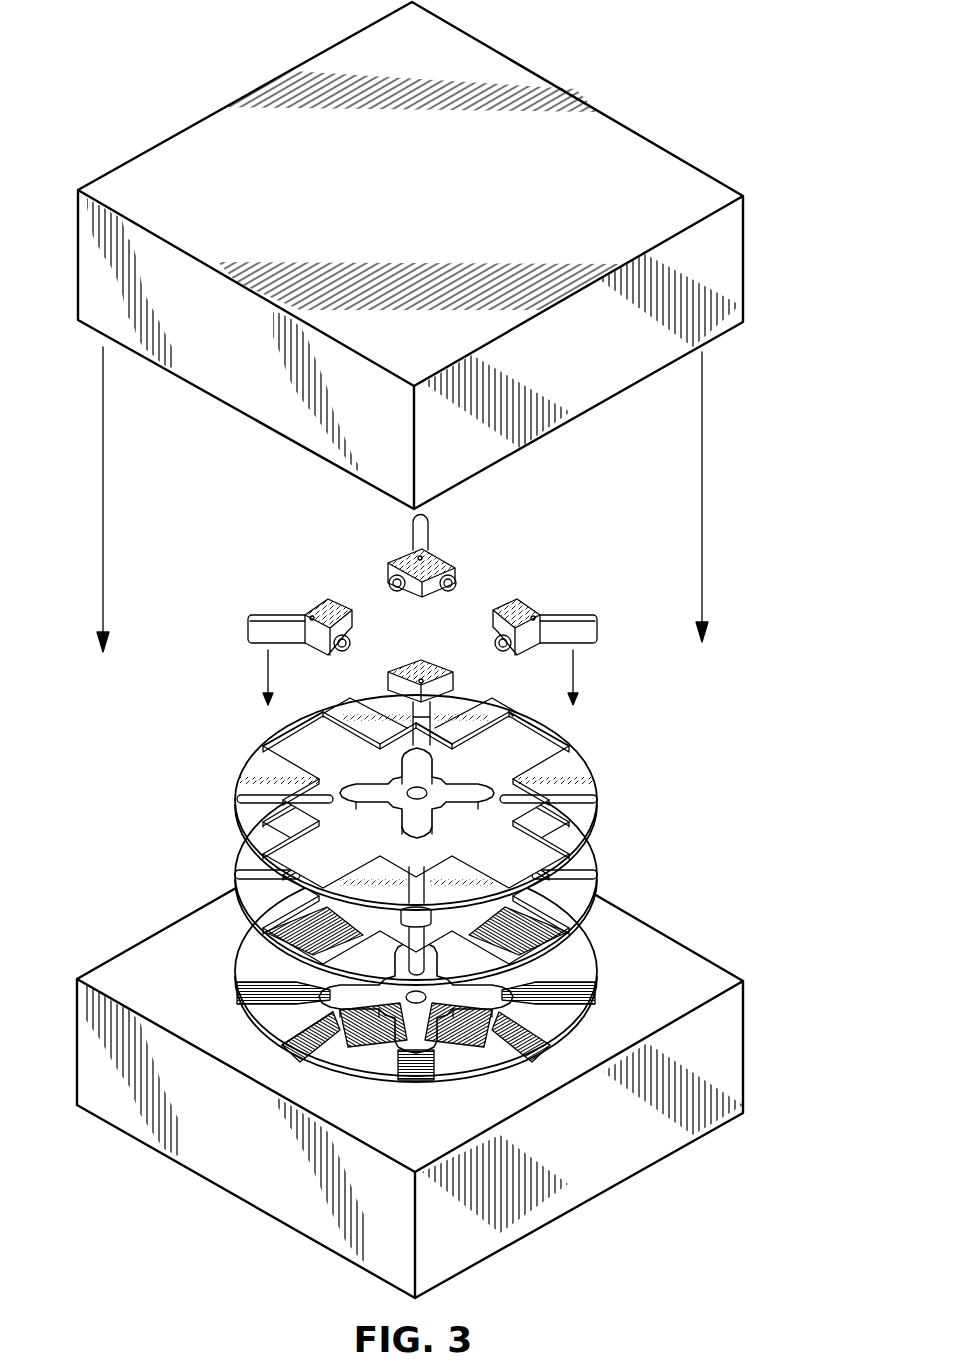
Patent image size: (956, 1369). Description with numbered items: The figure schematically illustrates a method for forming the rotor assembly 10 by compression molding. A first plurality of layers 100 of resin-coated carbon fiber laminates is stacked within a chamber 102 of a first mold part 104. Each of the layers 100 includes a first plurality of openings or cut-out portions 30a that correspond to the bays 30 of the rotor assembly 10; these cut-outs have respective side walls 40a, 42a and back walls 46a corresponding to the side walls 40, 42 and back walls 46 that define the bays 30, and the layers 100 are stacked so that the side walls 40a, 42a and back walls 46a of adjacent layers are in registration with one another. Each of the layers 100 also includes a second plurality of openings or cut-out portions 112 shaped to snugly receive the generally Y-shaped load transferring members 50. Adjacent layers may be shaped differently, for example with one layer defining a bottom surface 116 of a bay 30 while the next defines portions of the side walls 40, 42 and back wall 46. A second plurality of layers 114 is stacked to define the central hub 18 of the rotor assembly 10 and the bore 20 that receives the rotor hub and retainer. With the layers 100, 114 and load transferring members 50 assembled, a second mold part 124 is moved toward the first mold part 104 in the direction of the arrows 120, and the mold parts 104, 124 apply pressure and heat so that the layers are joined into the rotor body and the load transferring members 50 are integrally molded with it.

The rotor assembly 10 is at (716, 748).
The central hub 18 is at (420, 1013).
The bore 20 is at (440, 997).
The bay 30 is at (338, 1063).
The first plurality of openings or cut-out portions 30a is at (285, 730).
The side wall 40 is at (340, 932).
The side wall of cut-out portion 40a is at (545, 742).
The side wall 42 is at (290, 957).
The side wall of cut-out portion 42a is at (456, 738).
The back wall 46 is at (290, 935).
The back wall of cut-out portion 46a is at (521, 713).
The load transferring member 50 is at (602, 635).
The first plurality of layers 100 is at (598, 866).
The chamber 102 is at (427, 975).
The first mold part 104 is at (745, 1021).
The second plurality of openings or cut-out portions 112 is at (238, 798).
The second plurality of layers 114 is at (396, 752).
The bottom surface 116 is at (369, 1052).
The arrows 120 is at (628, 688).
The second mold part 124 is at (745, 254).